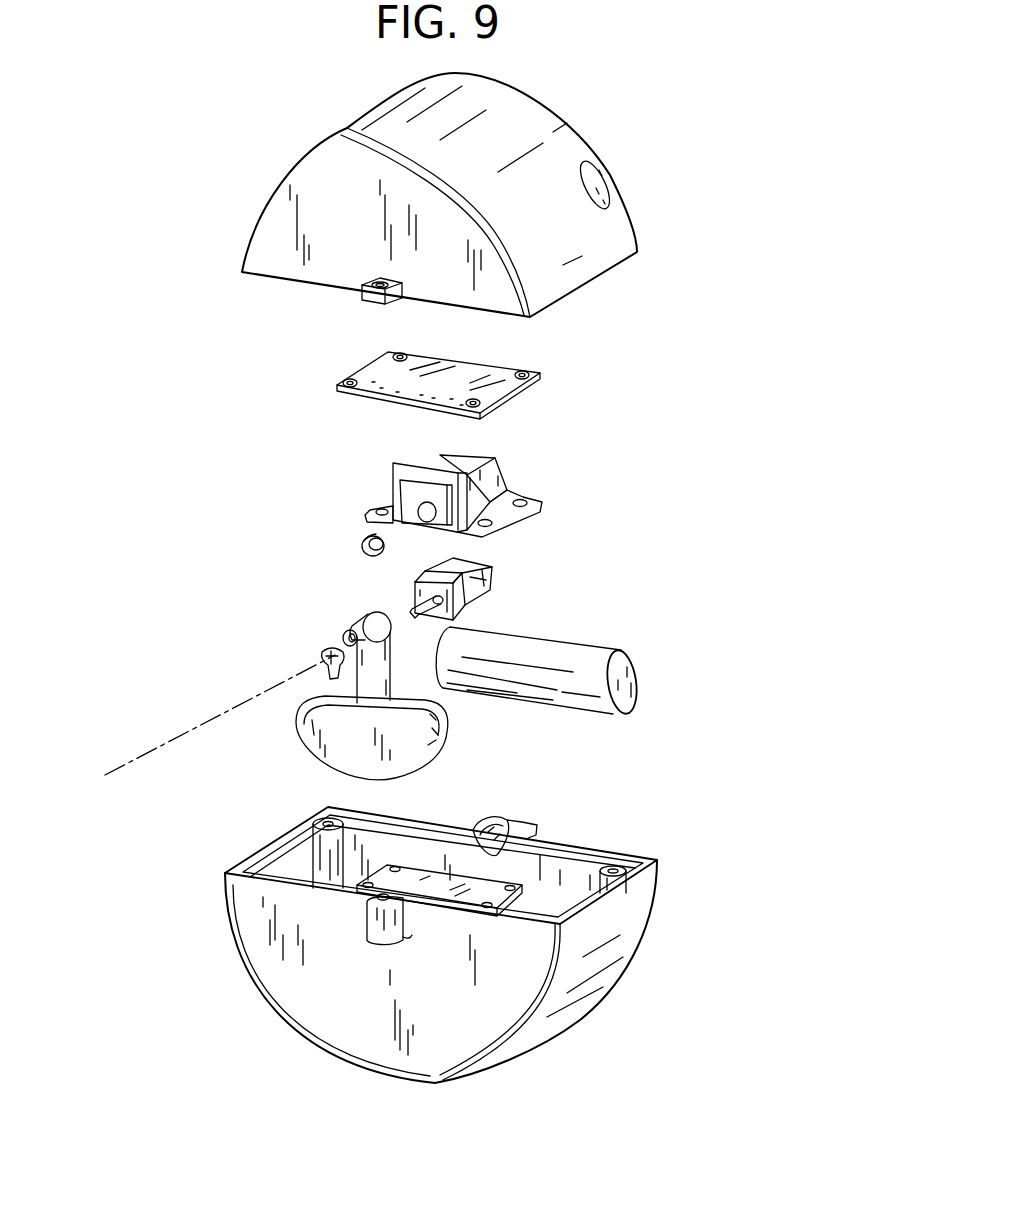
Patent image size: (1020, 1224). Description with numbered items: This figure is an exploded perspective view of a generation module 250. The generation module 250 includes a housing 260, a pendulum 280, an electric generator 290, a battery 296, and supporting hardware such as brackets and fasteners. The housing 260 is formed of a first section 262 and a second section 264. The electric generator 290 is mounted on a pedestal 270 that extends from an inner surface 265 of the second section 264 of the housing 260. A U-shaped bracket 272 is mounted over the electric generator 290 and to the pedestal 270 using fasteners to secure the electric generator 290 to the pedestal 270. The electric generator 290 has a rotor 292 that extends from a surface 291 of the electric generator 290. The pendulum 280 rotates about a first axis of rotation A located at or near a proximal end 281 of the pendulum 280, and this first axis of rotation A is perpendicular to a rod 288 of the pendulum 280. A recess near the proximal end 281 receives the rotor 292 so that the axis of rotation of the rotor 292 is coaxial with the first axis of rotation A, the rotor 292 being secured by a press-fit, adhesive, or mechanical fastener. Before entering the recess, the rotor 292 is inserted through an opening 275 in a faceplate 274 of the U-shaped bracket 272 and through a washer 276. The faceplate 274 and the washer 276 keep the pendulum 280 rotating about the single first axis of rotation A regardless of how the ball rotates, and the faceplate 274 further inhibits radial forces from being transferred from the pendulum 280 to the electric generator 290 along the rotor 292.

The generation module 250 is at (627, 410).
The housing 260 is at (198, 945).
The first section 262 is at (553, 132).
The second section 264 is at (459, 929).
The inner surface 265 is at (573, 875).
The pedestal 270 is at (487, 890).
The U-shaped bracket 272 is at (444, 488).
The faceplate 274 is at (398, 497).
The opening 275 is at (412, 493).
The washer 276 is at (362, 547).
The pendulum 280 is at (361, 685).
The proximal end 281 is at (372, 612).
The rod 288 is at (382, 667).
The electric generator 290 is at (456, 580).
The surface 291 is at (468, 562).
The rotor 292 is at (413, 597).
The battery 296 is at (580, 653).
The first axis of rotation A is at (156, 746).